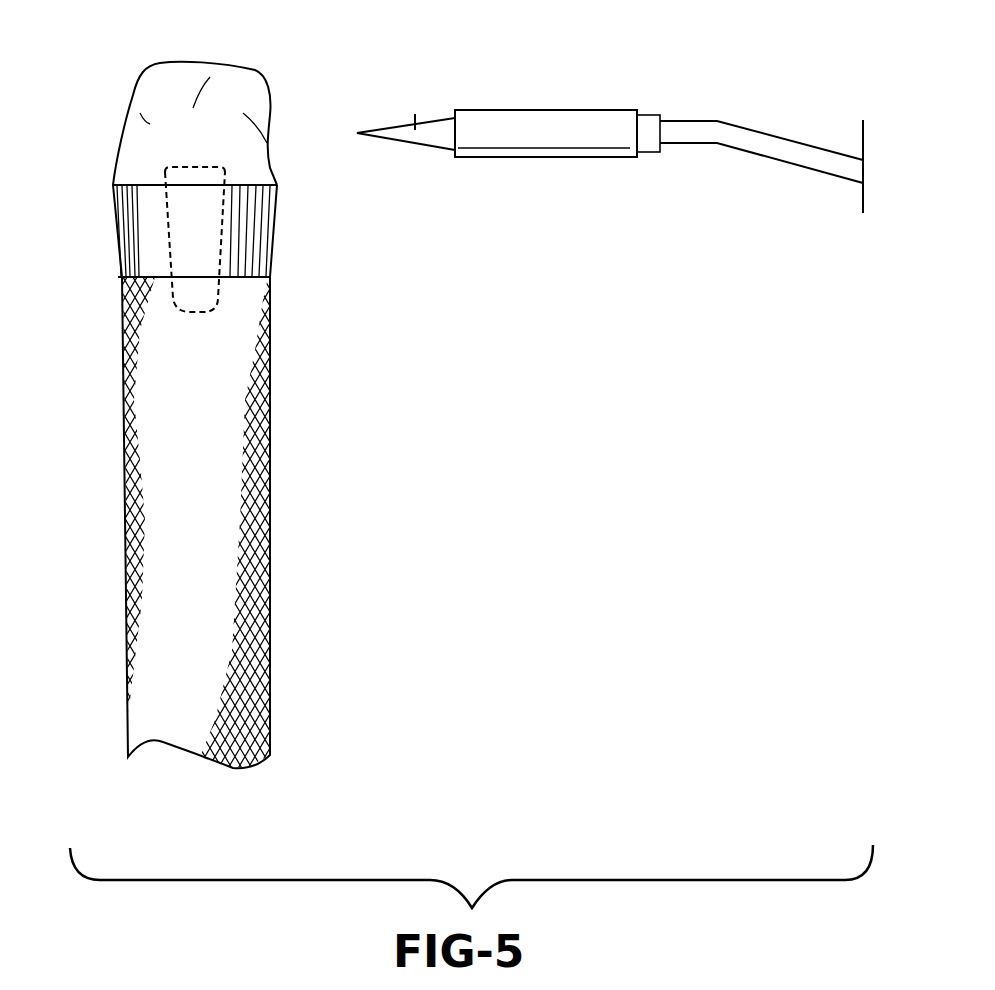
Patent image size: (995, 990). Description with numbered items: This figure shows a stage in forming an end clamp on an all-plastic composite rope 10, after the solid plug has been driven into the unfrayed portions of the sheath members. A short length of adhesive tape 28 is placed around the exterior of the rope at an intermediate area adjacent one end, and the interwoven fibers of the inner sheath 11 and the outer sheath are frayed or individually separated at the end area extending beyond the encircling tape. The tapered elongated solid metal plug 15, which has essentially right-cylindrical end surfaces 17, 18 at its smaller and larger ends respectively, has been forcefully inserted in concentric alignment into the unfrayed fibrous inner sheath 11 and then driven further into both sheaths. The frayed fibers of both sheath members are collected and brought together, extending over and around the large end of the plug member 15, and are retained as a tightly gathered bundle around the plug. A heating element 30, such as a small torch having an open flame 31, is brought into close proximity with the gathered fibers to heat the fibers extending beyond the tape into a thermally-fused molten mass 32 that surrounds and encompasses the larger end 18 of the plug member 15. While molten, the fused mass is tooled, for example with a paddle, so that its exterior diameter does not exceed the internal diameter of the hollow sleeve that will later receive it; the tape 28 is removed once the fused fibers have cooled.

The rope 10 is at (216, 415).
The inner sheath 11 is at (270, 422).
The tapered elongated solid metal plug 15 is at (204, 250).
The end surface 17 is at (137, 246).
The end surface 18 is at (197, 166).
The adhesive tape 28 is at (270, 250).
The heating element 30 is at (610, 121).
The open flame 31 is at (415, 114).
The thermally-fused molten mass 32 is at (243, 143).